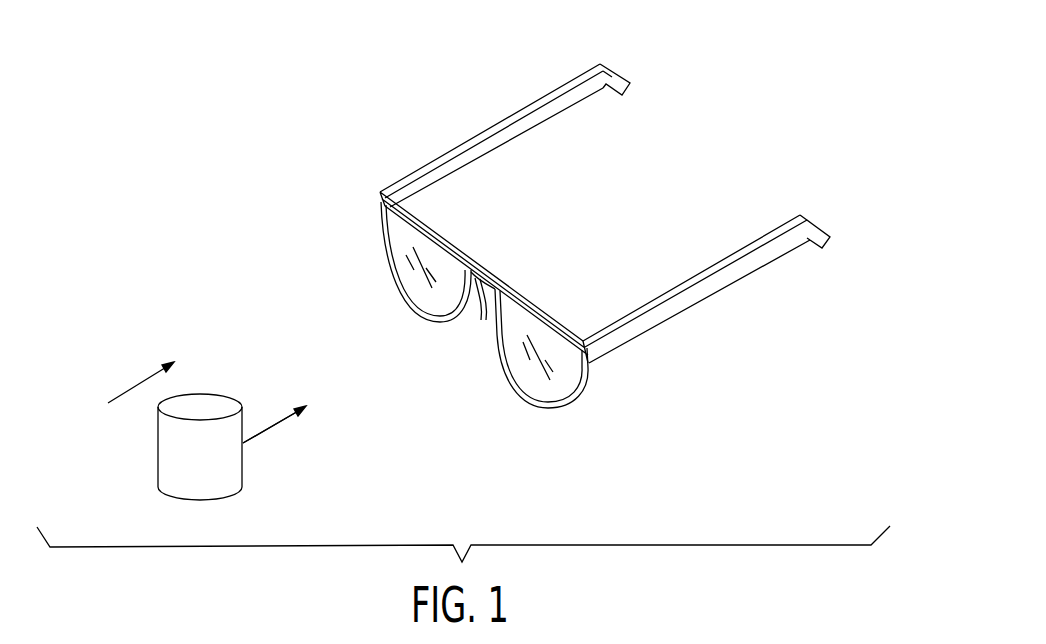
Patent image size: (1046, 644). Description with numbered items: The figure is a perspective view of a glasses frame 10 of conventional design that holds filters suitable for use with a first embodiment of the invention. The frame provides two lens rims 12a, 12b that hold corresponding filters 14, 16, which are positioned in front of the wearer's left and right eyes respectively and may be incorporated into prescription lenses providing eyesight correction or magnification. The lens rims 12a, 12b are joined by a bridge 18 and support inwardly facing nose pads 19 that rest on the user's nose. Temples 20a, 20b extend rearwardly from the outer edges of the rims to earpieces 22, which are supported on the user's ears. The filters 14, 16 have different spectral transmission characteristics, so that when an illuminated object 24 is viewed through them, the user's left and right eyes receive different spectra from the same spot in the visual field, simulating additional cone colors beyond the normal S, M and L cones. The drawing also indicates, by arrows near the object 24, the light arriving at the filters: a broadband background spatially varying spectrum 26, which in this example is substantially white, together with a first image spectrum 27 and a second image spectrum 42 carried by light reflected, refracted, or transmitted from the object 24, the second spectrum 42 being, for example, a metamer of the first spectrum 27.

The glasses frame 10 is at (589, 242).
The lens rim 12a is at (420, 315).
The lens rim 12b is at (513, 388).
The filter 14 is at (558, 393).
The filter 16 is at (383, 270).
The bridge 18 is at (488, 268).
The nose pads 19 is at (485, 312).
The temple 20a is at (535, 128).
The temple 20b is at (733, 281).
The earpieces 22 is at (605, 66).
The illuminated object 24 is at (208, 475).
The broadband background spectrum 26 is at (137, 385).
The first image spectrum 27 is at (268, 428).
The second image spectrum 42 is at (271, 426).